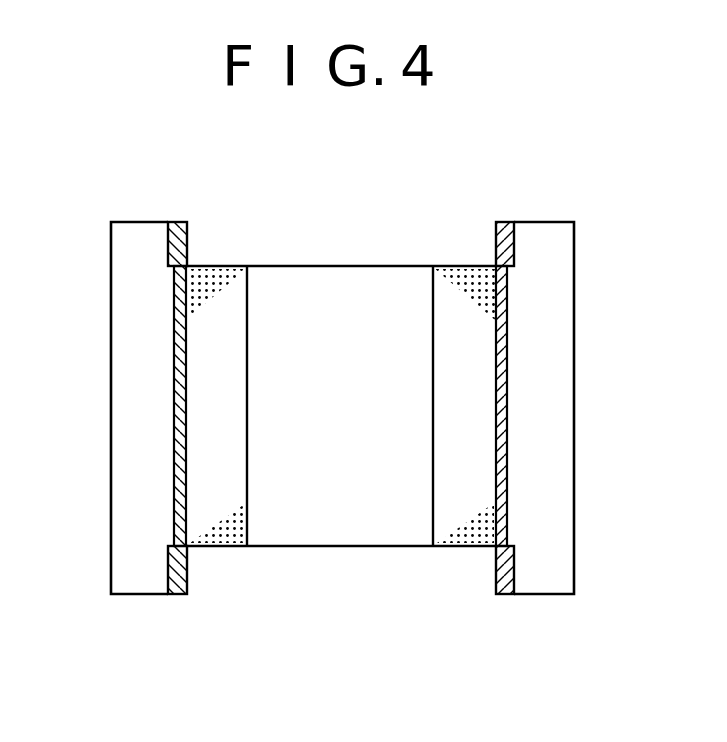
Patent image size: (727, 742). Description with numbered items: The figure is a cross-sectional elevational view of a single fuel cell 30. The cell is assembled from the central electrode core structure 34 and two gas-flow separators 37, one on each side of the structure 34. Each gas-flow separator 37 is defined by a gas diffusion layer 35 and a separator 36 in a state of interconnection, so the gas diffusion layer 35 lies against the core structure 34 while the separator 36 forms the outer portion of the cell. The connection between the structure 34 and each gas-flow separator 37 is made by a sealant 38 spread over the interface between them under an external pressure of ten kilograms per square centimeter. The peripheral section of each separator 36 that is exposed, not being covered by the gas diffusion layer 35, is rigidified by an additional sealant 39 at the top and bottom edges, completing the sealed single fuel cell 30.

The single fuel cell 30 is at (343, 238).
The structure 34 is at (330, 530).
The gas diffusion layer 35 is at (210, 537).
The separator 36 is at (143, 580).
The gas-flow separator 37 is at (181, 630).
The sealant 38 is at (178, 390).
The additional sealant 39 is at (187, 243).